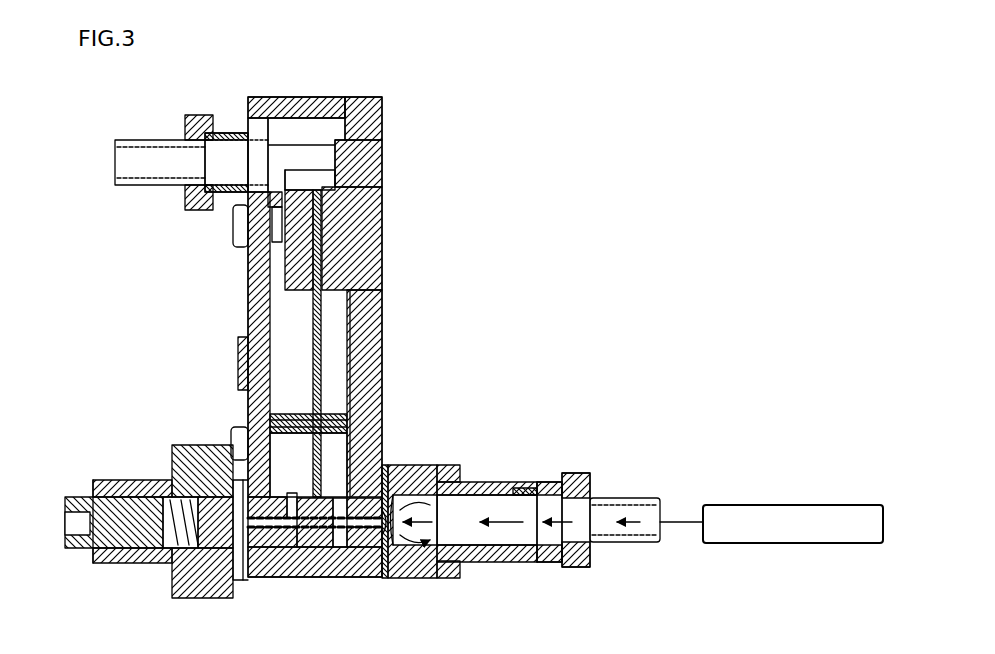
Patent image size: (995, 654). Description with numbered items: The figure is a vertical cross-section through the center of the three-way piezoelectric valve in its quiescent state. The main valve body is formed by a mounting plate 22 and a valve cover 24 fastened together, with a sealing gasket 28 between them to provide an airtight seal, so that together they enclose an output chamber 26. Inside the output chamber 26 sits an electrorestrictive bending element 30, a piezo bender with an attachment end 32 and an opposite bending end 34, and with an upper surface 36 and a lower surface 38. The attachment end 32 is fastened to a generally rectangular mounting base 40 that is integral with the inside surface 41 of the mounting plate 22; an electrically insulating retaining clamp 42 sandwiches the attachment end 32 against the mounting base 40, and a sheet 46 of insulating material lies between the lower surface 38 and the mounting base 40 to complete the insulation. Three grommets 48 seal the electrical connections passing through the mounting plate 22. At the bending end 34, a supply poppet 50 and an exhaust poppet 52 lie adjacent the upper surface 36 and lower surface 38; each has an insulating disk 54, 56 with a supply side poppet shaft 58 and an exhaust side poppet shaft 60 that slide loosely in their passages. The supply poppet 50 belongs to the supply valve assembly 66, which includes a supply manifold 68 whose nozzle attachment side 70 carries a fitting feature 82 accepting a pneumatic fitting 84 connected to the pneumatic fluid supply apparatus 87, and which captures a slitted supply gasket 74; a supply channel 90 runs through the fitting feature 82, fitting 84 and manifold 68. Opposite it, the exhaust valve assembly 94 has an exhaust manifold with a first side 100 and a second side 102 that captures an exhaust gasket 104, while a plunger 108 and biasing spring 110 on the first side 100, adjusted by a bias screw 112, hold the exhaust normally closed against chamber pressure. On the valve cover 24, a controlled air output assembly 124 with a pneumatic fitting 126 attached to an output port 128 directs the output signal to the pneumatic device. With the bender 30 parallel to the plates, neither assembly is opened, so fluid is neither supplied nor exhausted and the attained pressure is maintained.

The mounting plate 22 is at (368, 128).
The valve cover 24 is at (276, 107).
The output chamber 26 is at (332, 343).
The sealing gasket 28 is at (354, 105).
The electrorestrictive bending element 30 is at (322, 405).
The attachment end 32 is at (316, 258).
The bending end 34 is at (320, 567).
The upper surface 36 is at (325, 325).
The lower surface 38 is at (280, 323).
The mounting base 40 is at (327, 205).
The inside surface 41 is at (338, 160).
The retaining clamp 42 is at (318, 272).
The sheet of insulating material 46 is at (290, 272).
The grommets 48 is at (240, 360).
The supply poppet 50 is at (395, 535).
The exhaust poppet 52 is at (293, 577).
The insulating disk 54 is at (340, 567).
The insulating disk 56 is at (308, 567).
The supply side poppet shaft 58 is at (386, 470).
The exhaust side poppet shaft 60 is at (242, 495).
The supply valve assembly 66 is at (572, 440).
The supply manifold 68 is at (477, 547).
The nozzle attachment side 70 is at (525, 482).
The supply gasket 74 is at (405, 480).
The fitting feature 82 is at (528, 555).
The pneumatic fitting 84 is at (640, 540).
The pneumatic fluid supply apparatus 87 is at (790, 543).
The supply channel 90 is at (505, 535).
The exhaust valve assembly 94 is at (88, 567).
The first side 100 is at (172, 470).
The second side 102 is at (252, 587).
The exhaust gasket 104 is at (230, 580).
The plunger 108 is at (170, 578).
The biasing spring 110 is at (163, 563).
The bias screw 112 is at (93, 550).
The controlled air output assembly 124 is at (165, 115).
The pneumatic fitting 126 is at (158, 176).
The output port 128 is at (252, 128).